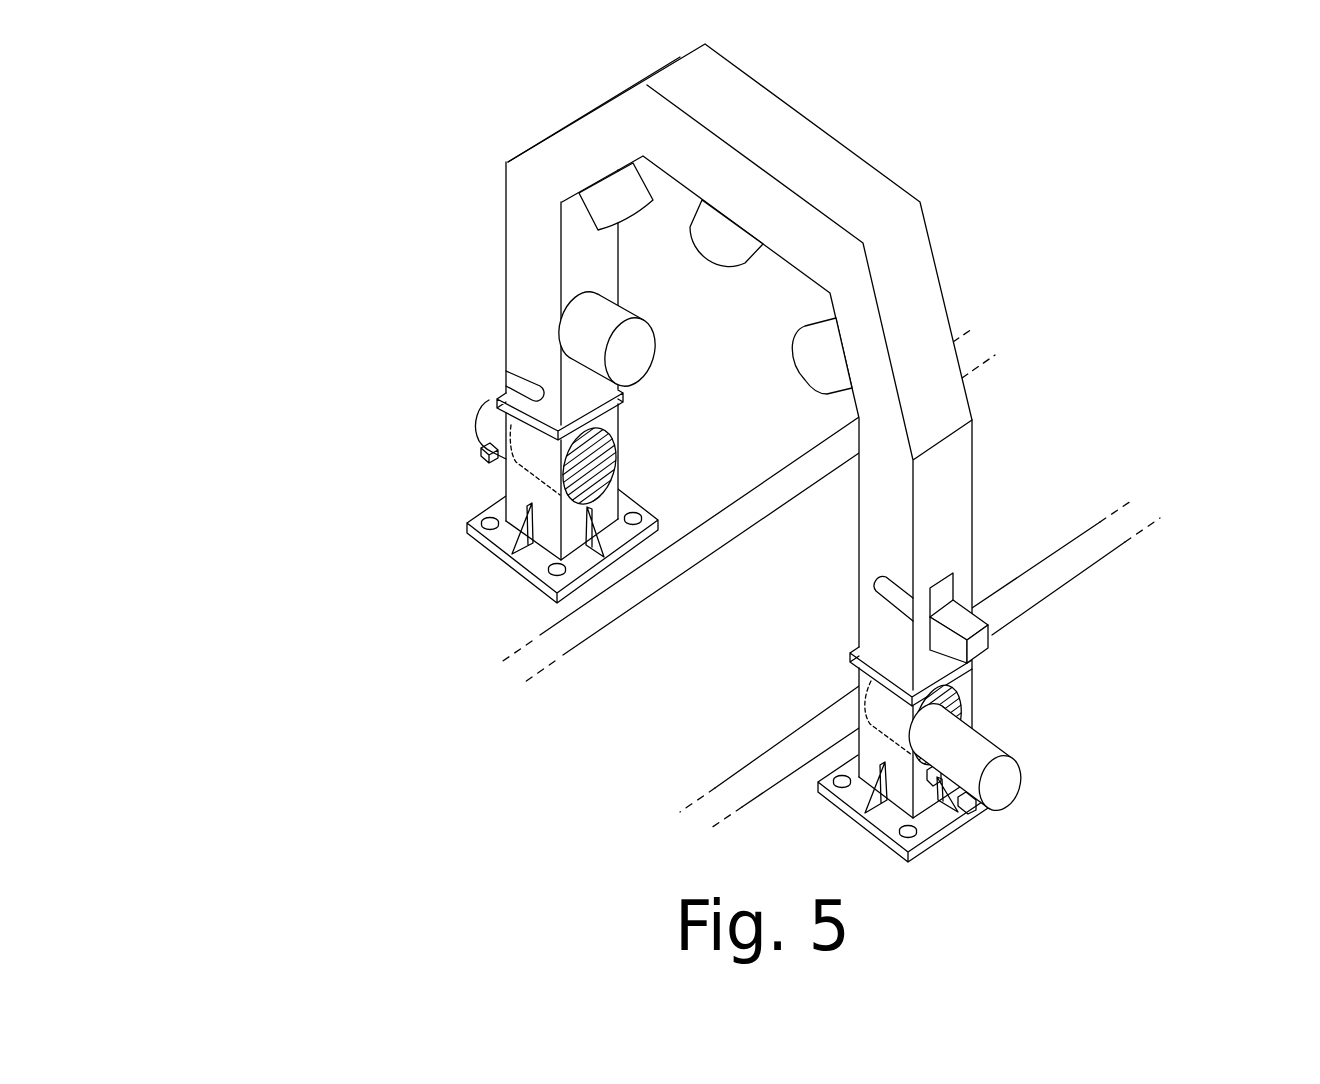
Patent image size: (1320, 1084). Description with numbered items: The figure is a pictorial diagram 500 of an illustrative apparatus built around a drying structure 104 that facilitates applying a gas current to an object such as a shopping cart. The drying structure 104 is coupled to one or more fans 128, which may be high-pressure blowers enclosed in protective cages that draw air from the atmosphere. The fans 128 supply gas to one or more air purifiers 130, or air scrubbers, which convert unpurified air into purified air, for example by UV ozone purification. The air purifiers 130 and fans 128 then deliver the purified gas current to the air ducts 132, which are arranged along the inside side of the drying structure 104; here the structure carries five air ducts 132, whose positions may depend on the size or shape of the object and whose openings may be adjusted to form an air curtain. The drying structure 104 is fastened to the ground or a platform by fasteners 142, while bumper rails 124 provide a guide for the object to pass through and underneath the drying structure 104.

The pictorial diagram 500 is at (194, 88).
The drying structure 104 is at (507, 160).
The air duct 132 is at (578, 310).
The fastener 142 is at (483, 516).
The bumper rail 124 is at (540, 635).
The air purifier 130 is at (990, 648).
The fan 128 is at (1014, 797).